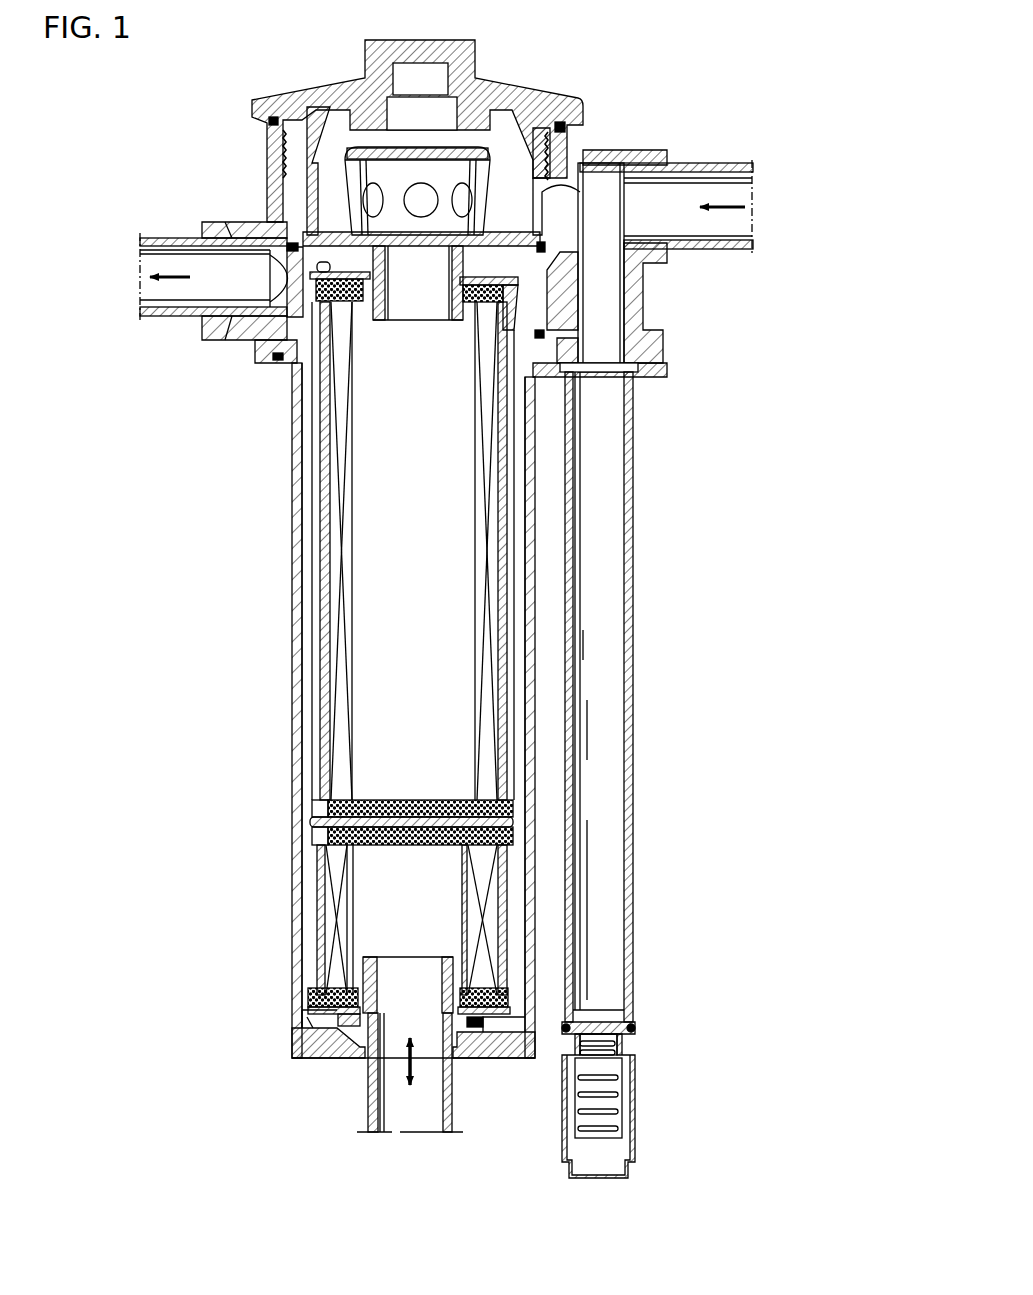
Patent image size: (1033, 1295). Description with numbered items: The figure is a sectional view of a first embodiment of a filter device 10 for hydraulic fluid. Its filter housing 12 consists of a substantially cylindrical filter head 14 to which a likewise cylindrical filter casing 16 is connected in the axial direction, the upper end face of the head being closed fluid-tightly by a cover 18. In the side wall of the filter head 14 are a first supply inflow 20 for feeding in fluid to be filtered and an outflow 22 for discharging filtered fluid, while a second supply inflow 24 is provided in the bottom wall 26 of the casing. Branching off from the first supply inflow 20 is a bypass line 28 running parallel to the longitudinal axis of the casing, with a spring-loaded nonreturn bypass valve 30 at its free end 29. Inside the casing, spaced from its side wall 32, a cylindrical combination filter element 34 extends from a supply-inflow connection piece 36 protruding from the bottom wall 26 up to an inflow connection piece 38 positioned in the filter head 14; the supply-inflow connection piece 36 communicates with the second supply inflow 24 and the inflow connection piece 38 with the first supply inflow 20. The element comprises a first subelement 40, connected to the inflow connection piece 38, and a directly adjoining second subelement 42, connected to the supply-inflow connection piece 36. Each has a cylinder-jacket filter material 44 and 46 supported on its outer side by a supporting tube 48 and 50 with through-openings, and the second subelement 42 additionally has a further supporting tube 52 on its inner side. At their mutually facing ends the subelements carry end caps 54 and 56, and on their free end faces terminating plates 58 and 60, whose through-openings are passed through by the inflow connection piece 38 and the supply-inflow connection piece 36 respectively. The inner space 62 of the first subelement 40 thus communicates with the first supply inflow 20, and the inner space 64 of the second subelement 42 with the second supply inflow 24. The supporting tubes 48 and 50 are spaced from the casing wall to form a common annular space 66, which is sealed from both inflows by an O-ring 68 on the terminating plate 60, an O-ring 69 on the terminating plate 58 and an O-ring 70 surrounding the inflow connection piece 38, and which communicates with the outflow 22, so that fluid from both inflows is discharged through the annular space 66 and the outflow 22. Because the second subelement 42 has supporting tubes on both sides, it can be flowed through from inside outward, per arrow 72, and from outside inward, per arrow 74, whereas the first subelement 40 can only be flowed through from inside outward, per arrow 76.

The filter device 10 is at (708, 340).
The filter housing 12 is at (286, 432).
The filter head 14 is at (260, 158).
The filter casing 16 is at (288, 628).
The cover 18 is at (560, 93).
The first supply inflow 20 is at (665, 148).
The outflow 22 is at (204, 336).
The second supply inflow 24 is at (380, 1108).
The bottom wall 26 is at (327, 1052).
The bypass line 28 is at (636, 690).
The free end 29 is at (634, 1024).
The bypass valve 30 is at (636, 1098).
The side wall 32 is at (292, 735).
The combination filter element 34 is at (318, 563).
The supply-inflow connection piece 36 is at (436, 1000).
The inflow connection piece 38 is at (437, 286).
The first subelement 40 is at (512, 606).
The second subelement 42 is at (508, 898).
The filter material 44 is at (488, 768).
The filter material 46 is at (500, 862).
The supporting tube 48 is at (508, 520).
The supporting tube 50 is at (503, 922).
The further supporting tube 52 is at (470, 953).
The end cap 54 is at (510, 804).
The end cap 56 is at (505, 832).
The terminating plate 58 is at (560, 288).
The terminating plate 60 is at (324, 1007).
The inner space 62 is at (427, 553).
The inner space 64 is at (427, 932).
The annular space 66 is at (312, 458).
The O-ring 68 is at (470, 1018).
The O-ring 69 is at (343, 272).
The O-ring 70 is at (355, 272).
The arrow 72 is at (332, 884).
The arrow 74 is at (343, 910).
The arrow 76 is at (377, 457).